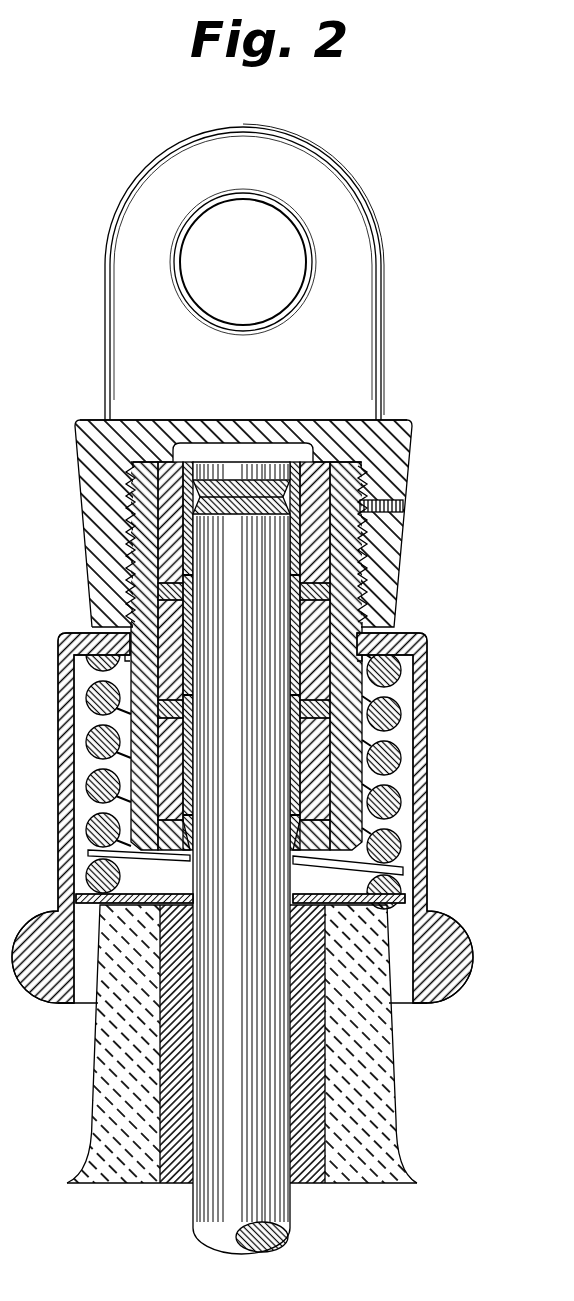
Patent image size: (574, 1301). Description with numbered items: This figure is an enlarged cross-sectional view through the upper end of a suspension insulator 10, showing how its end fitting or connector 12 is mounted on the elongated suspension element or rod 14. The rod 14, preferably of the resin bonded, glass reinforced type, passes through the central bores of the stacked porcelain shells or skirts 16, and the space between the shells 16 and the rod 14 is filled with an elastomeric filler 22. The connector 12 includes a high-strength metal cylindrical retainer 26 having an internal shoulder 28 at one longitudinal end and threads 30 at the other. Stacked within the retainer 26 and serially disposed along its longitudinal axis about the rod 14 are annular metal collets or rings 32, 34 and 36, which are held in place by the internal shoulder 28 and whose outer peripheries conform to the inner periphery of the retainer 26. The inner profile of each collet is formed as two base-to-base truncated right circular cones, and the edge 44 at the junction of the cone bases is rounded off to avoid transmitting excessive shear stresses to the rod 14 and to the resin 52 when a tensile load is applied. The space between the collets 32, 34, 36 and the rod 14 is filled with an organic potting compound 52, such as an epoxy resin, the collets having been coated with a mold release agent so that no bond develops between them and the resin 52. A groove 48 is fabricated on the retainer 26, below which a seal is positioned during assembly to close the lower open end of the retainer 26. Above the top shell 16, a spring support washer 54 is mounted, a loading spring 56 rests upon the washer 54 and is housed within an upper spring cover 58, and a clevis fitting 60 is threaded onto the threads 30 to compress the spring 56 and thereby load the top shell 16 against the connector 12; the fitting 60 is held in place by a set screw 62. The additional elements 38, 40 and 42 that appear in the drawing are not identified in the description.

The suspension insulator 10 is at (262, 375).
The end fitting or connector 12 is at (337, 455).
The suspension element or rod 14 is at (197, 1223).
The porcelain shells or skirts 16 is at (107, 1098).
The elastomeric filler 22 is at (307, 1183).
The cylindrical retainer 26 is at (347, 765).
The internal shoulder 28 is at (180, 830).
The threads 30 is at (132, 497).
The collet or ring 32 is at (320, 730).
The collet or ring 34 is at (320, 622).
The collet or ring 36 is at (320, 545).
The spacer ring 38 is at (162, 590).
The bushing segment 40 is at (188, 523).
The inner sleeve 42 is at (185, 580).
The edge 44 is at (190, 575).
The groove 48 is at (182, 855).
The potting compound 52 is at (190, 462).
The spring support washer 54 is at (403, 897).
The loading spring 56 is at (392, 847).
The upper spring cover 58 is at (428, 795).
The clevis fitting 60 is at (72, 440).
The set screw 62 is at (375, 507).